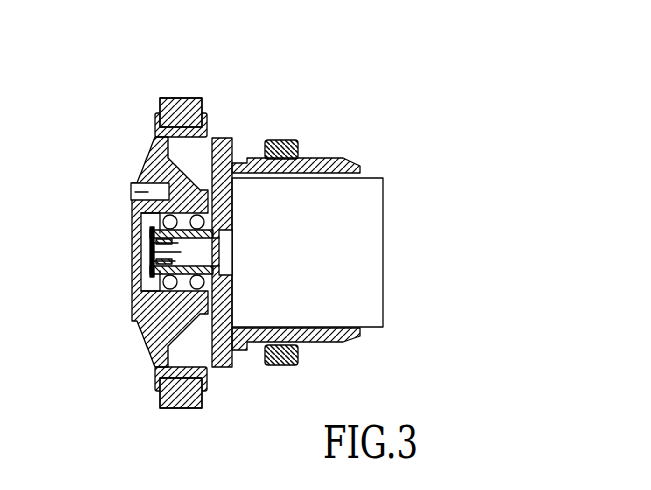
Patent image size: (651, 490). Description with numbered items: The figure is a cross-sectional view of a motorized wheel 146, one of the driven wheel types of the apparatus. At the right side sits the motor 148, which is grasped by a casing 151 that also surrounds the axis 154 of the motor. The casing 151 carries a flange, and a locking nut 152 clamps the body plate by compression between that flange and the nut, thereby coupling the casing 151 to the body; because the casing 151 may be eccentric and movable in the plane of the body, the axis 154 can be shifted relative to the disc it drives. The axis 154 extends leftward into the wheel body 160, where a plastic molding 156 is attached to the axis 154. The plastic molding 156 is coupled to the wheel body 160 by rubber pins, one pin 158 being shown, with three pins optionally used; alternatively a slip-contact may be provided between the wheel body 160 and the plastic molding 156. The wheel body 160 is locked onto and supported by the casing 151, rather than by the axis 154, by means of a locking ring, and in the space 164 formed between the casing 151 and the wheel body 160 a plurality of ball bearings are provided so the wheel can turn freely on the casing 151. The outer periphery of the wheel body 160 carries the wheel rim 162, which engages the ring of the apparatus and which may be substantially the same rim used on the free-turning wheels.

The motorized wheel 146 is at (282, 83).
The motor 148 is at (383, 215).
The casing 151 is at (345, 163).
The locking nut 152 is at (284, 140).
The axis 154 is at (150, 254).
The plastic molding 156 is at (132, 222).
The rubber pin 158 is at (131, 188).
The wheel body 160 is at (152, 152).
The wheel rim 162 is at (184, 97).
The space 164 is at (132, 226).